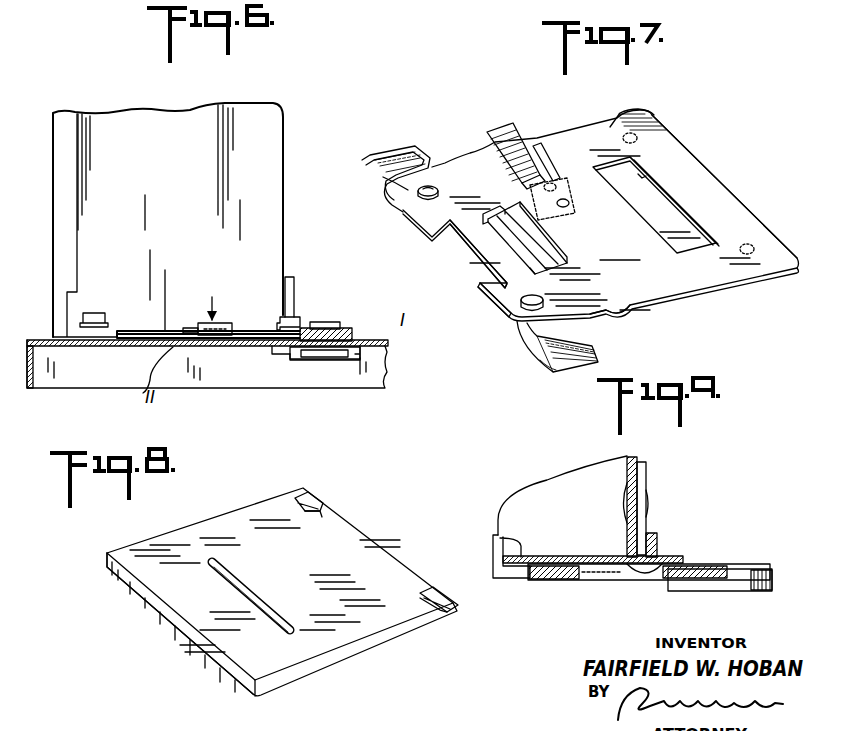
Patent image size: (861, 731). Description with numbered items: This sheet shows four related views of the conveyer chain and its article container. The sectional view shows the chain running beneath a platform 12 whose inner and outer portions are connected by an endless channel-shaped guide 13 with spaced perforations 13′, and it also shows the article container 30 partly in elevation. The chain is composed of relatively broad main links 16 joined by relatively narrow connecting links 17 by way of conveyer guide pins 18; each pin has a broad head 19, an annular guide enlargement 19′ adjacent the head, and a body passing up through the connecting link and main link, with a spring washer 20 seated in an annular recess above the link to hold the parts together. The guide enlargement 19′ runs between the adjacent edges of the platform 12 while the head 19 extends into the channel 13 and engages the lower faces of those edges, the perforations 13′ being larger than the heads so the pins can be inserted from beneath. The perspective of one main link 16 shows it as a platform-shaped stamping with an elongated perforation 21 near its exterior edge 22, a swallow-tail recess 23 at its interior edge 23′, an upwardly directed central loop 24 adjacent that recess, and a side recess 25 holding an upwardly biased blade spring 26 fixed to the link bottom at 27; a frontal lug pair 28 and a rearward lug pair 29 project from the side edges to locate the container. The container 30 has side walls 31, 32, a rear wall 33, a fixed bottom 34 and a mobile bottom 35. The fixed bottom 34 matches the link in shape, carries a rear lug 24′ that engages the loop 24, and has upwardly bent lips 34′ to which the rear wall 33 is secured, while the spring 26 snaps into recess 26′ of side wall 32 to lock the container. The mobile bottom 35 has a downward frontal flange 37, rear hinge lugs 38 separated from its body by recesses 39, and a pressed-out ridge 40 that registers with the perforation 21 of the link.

In FIG. 6, the base panel 12 is at (74, 353).
In FIG. 6, the endless channel-shaped guide 13 is at (290, 350).
In FIG. 6, the spaced perforations 13′ is at (305, 348).
In FIG. 6, the main link 16 is at (305, 328).
In FIG. 7, the main link 16 is at (566, 126).
In FIG. 9, the main link 16 is at (592, 579).
In FIG. 6, the connecting link 17 is at (368, 339).
In FIG. 7, the connecting link 17 is at (395, 158).
In FIG. 9, the connecting link 17 is at (766, 589).
In FIG. 6, the conveyer guide pin 18 is at (323, 327).
In FIG. 7, the conveyer guide pin 18 is at (419, 196).
In FIG. 6, the head 19 is at (340, 354).
In FIG. 6, the annular guide enlargement 19′ is at (328, 352).
In FIG. 6, the spring washer 20 is at (340, 326).
In FIG. 7, the elongated perforation 21 is at (642, 173).
In FIG. 7, the exterior edge 22 is at (738, 199).
In FIG. 7, the swallow-tail recess 23 is at (470, 252).
In FIG. 7, the interior edge 23′ is at (485, 290).
In FIG. 6, the loop 24 is at (282, 306).
In FIG. 7, the loop 24 is at (506, 205).
In FIG. 9, the loop 24 is at (655, 532).
In FIG. 6, the lug 24′ is at (297, 316).
In FIG. 9, the lug 24′ is at (667, 556).
In FIG. 7, the recess 25 is at (555, 160).
In FIG. 6, the blade spring 26 is at (230, 323).
In FIG. 7, the blade spring 26 is at (494, 128).
In FIG. 6, the recess 26′ is at (196, 324).
In FIG. 7, the spot weld 27 is at (594, 188).
In FIG. 7, the frontal lug pair 28 is at (627, 110).
In FIG. 7, the rearward lug pair 29 is at (620, 318).
In FIG. 6, the article container 30 is at (185, 85).
In FIG. 9, the article container 30 is at (544, 456).
In FIG. 9, the side wall 31 is at (575, 519).
In FIG. 6, the side wall 32 is at (180, 161).
In FIG. 6, the rear wall 33 is at (283, 142).
In FIG. 9, the rear wall 33 is at (627, 468).
In FIG. 9, the fixed bottom 34 is at (628, 577).
In FIG. 6, the upwardly bent lips 34′ is at (282, 273).
In FIG. 9, the upwardly bent lips 34′ is at (644, 468).
In FIG. 8, the mobile bottom 35 is at (395, 641).
In FIG. 9, the mobile bottom 35 is at (497, 540).
In FIG. 8, the frontal flange 37 is at (205, 643).
In FIG. 8, the hinge lugs 38 is at (303, 498).
In FIG. 8, the recesses 39 is at (322, 512).
In FIG. 8, the ridge 40 is at (264, 604).